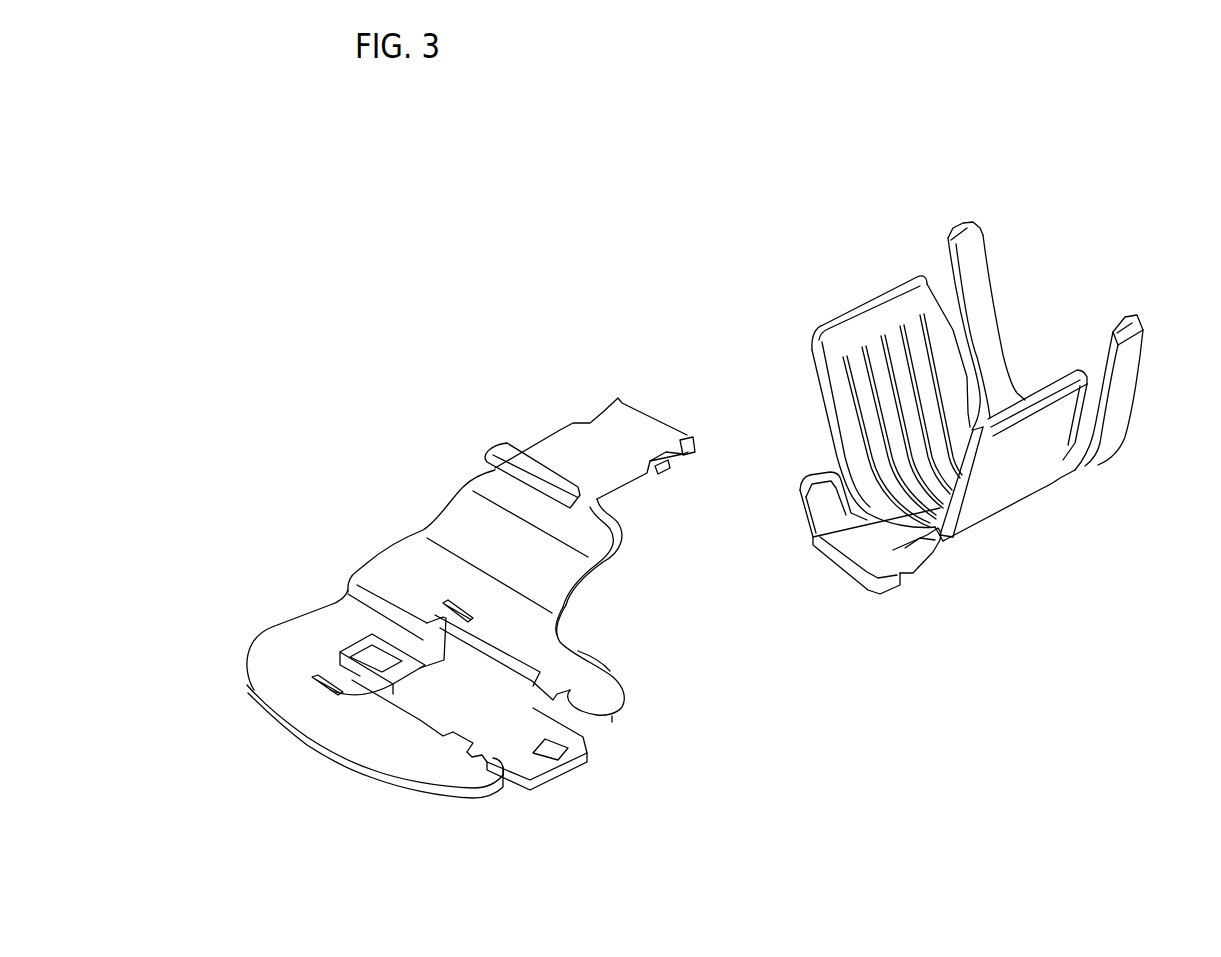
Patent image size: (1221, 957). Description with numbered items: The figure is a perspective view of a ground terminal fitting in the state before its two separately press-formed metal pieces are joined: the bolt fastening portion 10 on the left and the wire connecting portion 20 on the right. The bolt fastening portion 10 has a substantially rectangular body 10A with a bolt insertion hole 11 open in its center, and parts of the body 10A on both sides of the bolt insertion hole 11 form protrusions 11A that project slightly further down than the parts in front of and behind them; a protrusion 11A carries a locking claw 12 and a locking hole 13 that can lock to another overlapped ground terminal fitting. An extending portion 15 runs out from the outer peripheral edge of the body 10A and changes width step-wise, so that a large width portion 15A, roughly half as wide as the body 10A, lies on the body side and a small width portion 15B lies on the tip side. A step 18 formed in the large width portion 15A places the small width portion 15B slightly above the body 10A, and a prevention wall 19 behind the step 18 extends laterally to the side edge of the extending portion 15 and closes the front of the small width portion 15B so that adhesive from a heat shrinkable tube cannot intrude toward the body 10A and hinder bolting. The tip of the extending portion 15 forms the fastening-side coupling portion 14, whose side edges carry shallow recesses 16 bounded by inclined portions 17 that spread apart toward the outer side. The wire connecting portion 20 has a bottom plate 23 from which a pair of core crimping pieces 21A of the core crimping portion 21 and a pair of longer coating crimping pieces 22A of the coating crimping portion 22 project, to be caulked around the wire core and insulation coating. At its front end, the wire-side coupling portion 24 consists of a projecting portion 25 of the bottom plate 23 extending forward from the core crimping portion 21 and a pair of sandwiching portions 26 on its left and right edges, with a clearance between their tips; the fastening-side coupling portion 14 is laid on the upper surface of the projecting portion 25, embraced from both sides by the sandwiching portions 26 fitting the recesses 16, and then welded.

The bolt fastening portion 10 is at (351, 380).
The body 10A is at (367, 727).
The bolt insertion hole 11 is at (473, 610).
The protrusions 11A is at (429, 653).
The locking claw 12 is at (540, 752).
The locking hole 13 is at (352, 633).
The fastening-side coupling portion 14 is at (640, 430).
The extending portion 15 is at (721, 553).
The large width portion 15A is at (567, 572).
The small width portion 15B is at (608, 468).
The recesses 16 is at (601, 410).
The inclined portions 17 is at (688, 436).
The step 18 is at (457, 518).
The prevention wall 19 is at (535, 467).
The wire connecting portion 20 is at (1015, 176).
The core crimping portion 21 is at (993, 507).
The core crimping pieces 21A is at (1003, 448).
The coating crimping portion 22 is at (1115, 432).
The coating crimping pieces 22A is at (1108, 350).
The bottom plate 23 is at (943, 533).
The wire-side coupling portion 24 is at (975, 660).
The projecting portion 25 is at (843, 557).
The sandwiching portions 26 is at (830, 500).